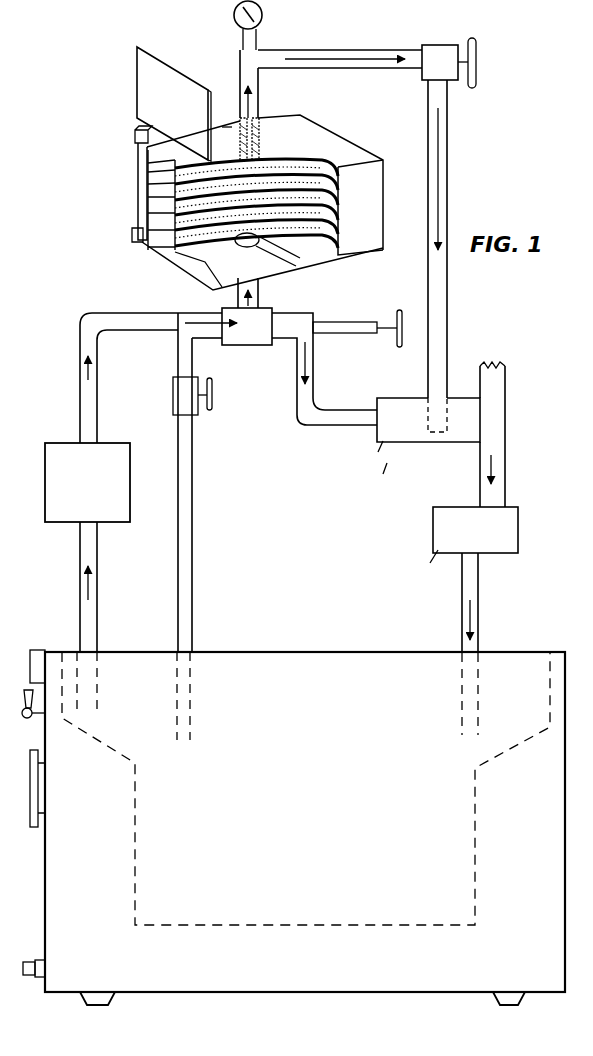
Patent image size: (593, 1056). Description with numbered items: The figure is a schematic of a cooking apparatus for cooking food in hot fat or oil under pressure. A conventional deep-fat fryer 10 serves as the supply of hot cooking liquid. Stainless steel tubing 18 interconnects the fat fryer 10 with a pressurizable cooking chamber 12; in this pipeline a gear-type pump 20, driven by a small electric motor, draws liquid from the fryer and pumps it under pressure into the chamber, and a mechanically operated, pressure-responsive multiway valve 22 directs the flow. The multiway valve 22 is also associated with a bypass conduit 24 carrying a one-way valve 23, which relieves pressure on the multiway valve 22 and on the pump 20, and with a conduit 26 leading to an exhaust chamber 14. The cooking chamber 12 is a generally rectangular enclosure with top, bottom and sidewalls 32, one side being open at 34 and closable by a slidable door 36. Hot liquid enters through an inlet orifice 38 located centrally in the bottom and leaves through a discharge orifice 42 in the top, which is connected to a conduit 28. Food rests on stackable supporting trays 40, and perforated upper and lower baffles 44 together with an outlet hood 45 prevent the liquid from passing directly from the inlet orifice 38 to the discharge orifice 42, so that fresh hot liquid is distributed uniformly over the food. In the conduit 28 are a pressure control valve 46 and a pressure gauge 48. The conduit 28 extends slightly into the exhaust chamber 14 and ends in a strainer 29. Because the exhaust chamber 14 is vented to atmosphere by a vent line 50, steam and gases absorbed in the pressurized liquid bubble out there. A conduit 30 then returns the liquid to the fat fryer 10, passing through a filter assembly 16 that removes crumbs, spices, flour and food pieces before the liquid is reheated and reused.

The fat fryer 10 is at (312, 844).
The cooking chamber 12 is at (224, 126).
The exhaust chamber 14 is at (453, 438).
The filter assembly 16 is at (510, 530).
The tubing 18 is at (78, 373).
The pump 20 is at (121, 482).
The multiway valve 22 is at (247, 338).
The one-way valve 23 is at (197, 410).
The conduit 24 is at (190, 515).
The conduit 26 is at (296, 390).
The conduit 28 is at (258, 110).
The strainer 29 is at (425, 410).
The conduit 30 is at (480, 488).
The sidewalls 32 is at (313, 135).
The open side 34 is at (175, 254).
The door 36 is at (142, 78).
The inlet orifice 38 is at (186, 262).
The trays 40 is at (142, 207).
The discharge orifice 42 is at (273, 147).
The baffle 44 is at (140, 143).
The outlet hood 45 is at (327, 158).
The pressure control valve 46 is at (437, 50).
The gauge 48 is at (262, 38).
The vent line 50 is at (498, 390).